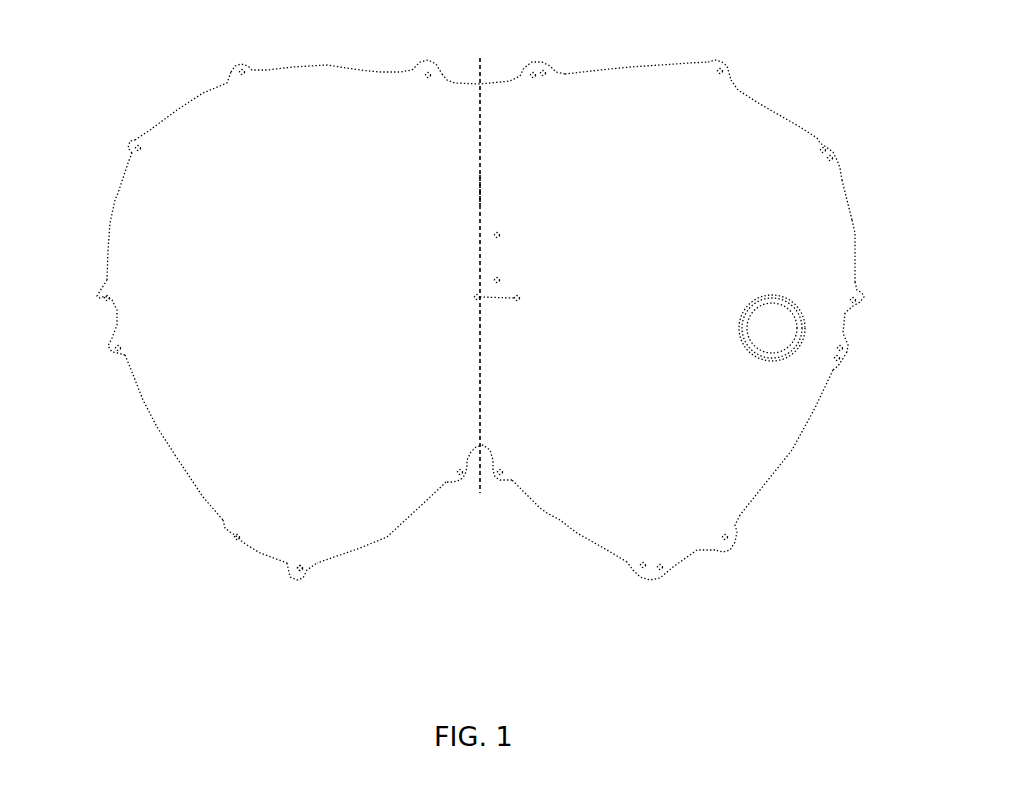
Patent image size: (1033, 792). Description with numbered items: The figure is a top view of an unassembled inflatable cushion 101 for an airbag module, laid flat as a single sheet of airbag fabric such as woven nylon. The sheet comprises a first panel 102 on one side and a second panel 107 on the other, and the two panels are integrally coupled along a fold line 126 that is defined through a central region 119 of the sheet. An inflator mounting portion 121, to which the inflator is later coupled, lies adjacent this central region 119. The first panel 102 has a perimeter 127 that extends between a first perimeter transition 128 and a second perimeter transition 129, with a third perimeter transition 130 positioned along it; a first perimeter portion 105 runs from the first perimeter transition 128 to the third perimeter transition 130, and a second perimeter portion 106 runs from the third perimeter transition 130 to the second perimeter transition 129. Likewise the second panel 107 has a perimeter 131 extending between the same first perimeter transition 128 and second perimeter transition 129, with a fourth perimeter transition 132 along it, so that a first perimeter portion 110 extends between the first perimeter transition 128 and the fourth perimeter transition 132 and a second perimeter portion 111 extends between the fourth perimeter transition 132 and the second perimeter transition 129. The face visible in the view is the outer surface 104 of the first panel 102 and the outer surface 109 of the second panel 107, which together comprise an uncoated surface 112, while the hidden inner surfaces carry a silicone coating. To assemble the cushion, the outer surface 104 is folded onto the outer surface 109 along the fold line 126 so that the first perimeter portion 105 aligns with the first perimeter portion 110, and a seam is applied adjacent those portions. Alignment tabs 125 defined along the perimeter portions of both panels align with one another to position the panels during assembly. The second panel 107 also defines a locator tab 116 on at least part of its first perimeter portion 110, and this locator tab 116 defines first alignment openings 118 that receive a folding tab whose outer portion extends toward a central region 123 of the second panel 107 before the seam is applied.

The inflatable cushion 101 is at (818, 70).
The first panel 102 is at (251, 168).
The outer surface 104 is at (239, 450).
The first perimeter portion 105 is at (118, 198).
The second perimeter portion 106 is at (387, 538).
The second panel 107 is at (643, 118).
The outer surface 109 is at (578, 480).
The first perimeter portion 110 is at (855, 258).
The second perimeter portion 111 is at (540, 509).
The uncoated surface 112 is at (332, 330).
The locator tab 116 is at (850, 353).
The first alignment openings 118 is at (837, 359).
The central region 119 is at (464, 189).
The inflator mounting portion 121 is at (497, 263).
The central region 123 is at (645, 289).
The alignment tabs 125 is at (238, 66).
The fold line 126 is at (480, 131).
The perimeter 127 is at (157, 428).
The first perimeter transition 128 is at (480, 84).
The second perimeter transition 129 is at (481, 444).
The third perimeter transition 130 is at (316, 564).
The perimeter 131 is at (792, 450).
The fourth perimeter transition 132 is at (627, 563).